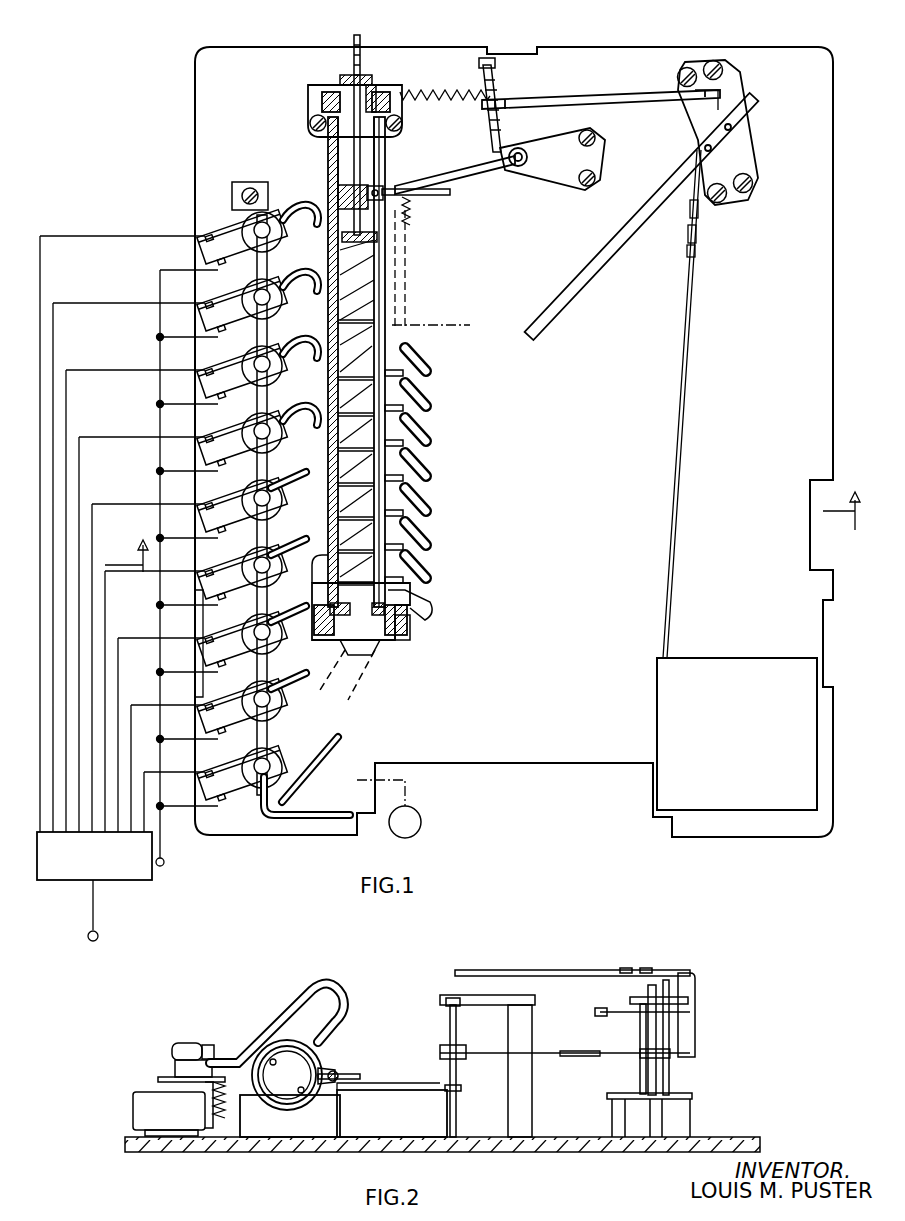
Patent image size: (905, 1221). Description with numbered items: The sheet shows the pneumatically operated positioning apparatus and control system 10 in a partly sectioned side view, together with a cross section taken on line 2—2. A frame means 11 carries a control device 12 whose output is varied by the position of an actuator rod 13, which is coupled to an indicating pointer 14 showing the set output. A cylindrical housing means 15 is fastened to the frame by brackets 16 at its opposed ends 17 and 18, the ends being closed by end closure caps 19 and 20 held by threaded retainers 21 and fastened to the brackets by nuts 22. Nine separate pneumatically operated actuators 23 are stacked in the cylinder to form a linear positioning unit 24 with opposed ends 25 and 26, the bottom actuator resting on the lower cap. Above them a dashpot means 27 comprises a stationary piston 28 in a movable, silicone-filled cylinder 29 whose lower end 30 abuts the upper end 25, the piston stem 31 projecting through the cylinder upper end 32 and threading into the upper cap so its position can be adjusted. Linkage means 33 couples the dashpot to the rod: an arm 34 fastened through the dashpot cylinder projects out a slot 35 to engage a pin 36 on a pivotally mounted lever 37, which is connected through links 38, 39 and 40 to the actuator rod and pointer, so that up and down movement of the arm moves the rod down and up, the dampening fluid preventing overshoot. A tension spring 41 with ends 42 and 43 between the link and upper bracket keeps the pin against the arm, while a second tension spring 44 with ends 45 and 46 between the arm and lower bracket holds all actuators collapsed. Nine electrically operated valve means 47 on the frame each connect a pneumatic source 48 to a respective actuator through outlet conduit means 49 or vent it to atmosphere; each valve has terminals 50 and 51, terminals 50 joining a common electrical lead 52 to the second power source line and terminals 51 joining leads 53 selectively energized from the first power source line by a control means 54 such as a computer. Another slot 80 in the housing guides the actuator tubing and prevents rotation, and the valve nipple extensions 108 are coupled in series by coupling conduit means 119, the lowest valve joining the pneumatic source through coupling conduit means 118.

In FIG. 1, the pneumatically operated positioning apparatus and control system 10 is at (812, 42).
In FIG. 2, the pneumatically operated positioning apparatus and control system 10 is at (705, 995).
In FIG. 1, the frame means 11 is at (517, 765).
In FIG. 2, the frame means 11 is at (722, 1137).
In FIG. 1, the control device 12 is at (713, 668).
In FIG. 1, the actuator rod 13 is at (680, 465).
In FIG. 2, the actuator rod 13 is at (595, 1012).
In FIG. 1, the indicating pointer 14 is at (585, 290).
In FIG. 2, the indicating pointer 14 is at (530, 973).
In FIG. 1, the cylindrical housing means 15 is at (338, 190).
In FIG. 2, the cylindrical housing means 15 is at (318, 1100).
In FIG. 1, the brackets 16 is at (308, 105).
In FIG. 1, the upper end of cylinder 17 is at (328, 128).
In FIG. 1, the lower end of cylinder 18 is at (328, 575).
In FIG. 1, the upper end closure cap 19 is at (352, 58).
In FIG. 1, the lower end closure cap 20 is at (368, 660).
In FIG. 1, the threaded retainers 21 is at (380, 85).
In FIG. 1, the nuts 22 is at (340, 80).
In FIG. 1, the pneumatically operated actuators 23 is at (340, 322).
In FIG. 2, the pneumatically operated actuators 23 is at (268, 1065).
In FIG. 1, the linear positioning unit 24 is at (400, 385).
In FIG. 1, the upper end of positioning unit 25 is at (388, 308).
In FIG. 1, the lower end of positioning unit 26 is at (400, 640).
In FIG. 1, the dashpot means 27 is at (380, 265).
In FIG. 1, the piston 28 is at (340, 236).
In FIG. 1, the cylinder 29 is at (392, 245).
In FIG. 1, the lower end of dashpot cylinder 30 is at (340, 295).
In FIG. 1, the stem 31 is at (354, 150).
In FIG. 1, the upper end of dashpot cylinder 32 is at (384, 182).
In FIG. 1, the linkage means 33 is at (610, 75).
In FIG. 2, the linkage means 33 is at (572, 1052).
In FIG. 1, the arm 34 is at (420, 192).
In FIG. 2, the arm 34 is at (352, 1076).
In FIG. 1, the slot 35 is at (385, 165).
In FIG. 1, the pin 36 is at (430, 178).
In FIG. 2, the pin 36 is at (330, 1062).
In FIG. 1, the lever 37 is at (495, 168).
In FIG. 2, the lever 37 is at (390, 1090).
In FIG. 1, the link 38 is at (503, 140).
In FIG. 2, the link 38 is at (453, 1067).
In FIG. 1, the link 39 is at (628, 95).
In FIG. 2, the link 39 is at (555, 1055).
In FIG. 1, the link 40 is at (690, 118).
In FIG. 2, the link 40 is at (697, 1040).
In FIG. 1, the tension spring 41 is at (488, 60).
In FIG. 1, the spring end 42 is at (460, 105).
In FIG. 1, the spring end 43 is at (403, 88).
In FIG. 1, the tension spring 44 is at (443, 326).
In FIG. 2, the tension spring 44 is at (340, 1072).
In FIG. 1, the spring end 45 is at (412, 212).
In FIG. 1, the spring end 46 is at (425, 620).
In FIG. 1, the electrically operated valve means 47 is at (222, 215).
In FIG. 2, the electrically operated valve means 47 is at (135, 1092).
In FIG. 1, the pneumatic source 48 is at (410, 825).
In FIG. 1, the outlet conduit means 49 is at (290, 210).
In FIG. 2, the outlet conduit means 49 is at (290, 1005).
In FIG. 1, the terminal 50 is at (210, 262).
In FIG. 1, the terminal 51 is at (200, 230).
In FIG. 1, the electrical lead 52 is at (168, 846).
In FIG. 1, the leads 53 is at (102, 236).
In FIG. 1, the control means 54 is at (65, 875).
In FIG. 1, the slot 80 is at (392, 335).
In FIG. 1, the nipple extension 108 is at (225, 192).
In FIG. 1, the coupling conduit means 118 is at (322, 790).
In FIG. 1, the coupling conduit means 119 is at (250, 270).
In FIG. 1, the section line 2— 2 is at (483, 520).